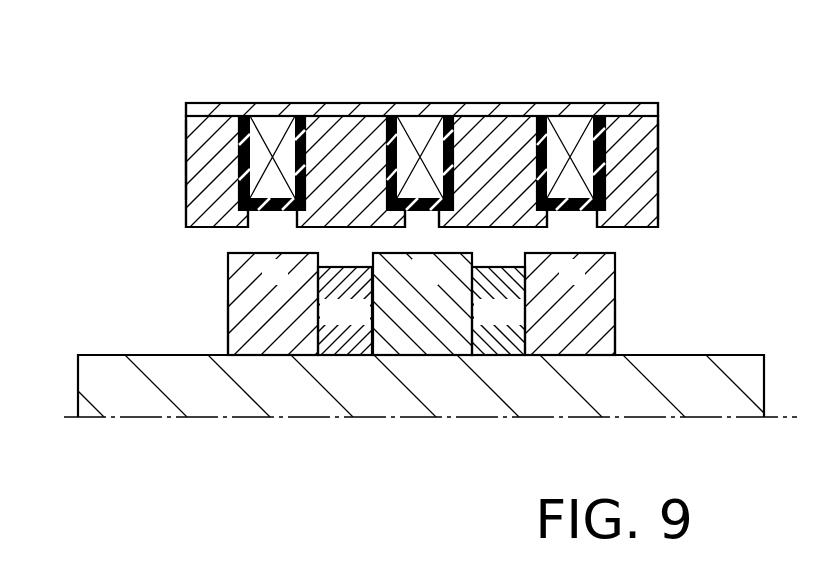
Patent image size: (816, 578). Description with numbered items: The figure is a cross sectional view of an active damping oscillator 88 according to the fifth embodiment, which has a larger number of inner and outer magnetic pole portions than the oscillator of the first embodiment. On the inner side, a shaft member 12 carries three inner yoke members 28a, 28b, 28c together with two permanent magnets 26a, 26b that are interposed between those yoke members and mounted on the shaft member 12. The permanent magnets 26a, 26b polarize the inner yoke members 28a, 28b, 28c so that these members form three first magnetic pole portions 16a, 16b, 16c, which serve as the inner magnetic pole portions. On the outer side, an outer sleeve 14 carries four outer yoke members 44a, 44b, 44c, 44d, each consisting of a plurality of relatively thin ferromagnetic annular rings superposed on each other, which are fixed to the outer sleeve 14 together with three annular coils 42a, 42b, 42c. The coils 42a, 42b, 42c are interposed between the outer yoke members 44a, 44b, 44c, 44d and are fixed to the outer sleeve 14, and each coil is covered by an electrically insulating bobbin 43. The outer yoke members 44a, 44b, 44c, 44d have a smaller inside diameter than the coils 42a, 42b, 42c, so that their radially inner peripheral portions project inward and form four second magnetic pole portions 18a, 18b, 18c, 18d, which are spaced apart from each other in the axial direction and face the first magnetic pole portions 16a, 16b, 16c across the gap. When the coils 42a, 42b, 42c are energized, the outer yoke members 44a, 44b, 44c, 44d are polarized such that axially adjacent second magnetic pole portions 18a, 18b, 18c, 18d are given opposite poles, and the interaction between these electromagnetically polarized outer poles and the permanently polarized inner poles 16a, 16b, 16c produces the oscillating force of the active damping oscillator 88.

The shaft member 12 is at (137, 365).
The outer sleeve 14 is at (210, 110).
The first magnetic pole portion 16a is at (250, 258).
The first magnetic pole portion 16b is at (392, 262).
The first magnetic pole portion 16c is at (590, 258).
The second magnetic pole portion 18a is at (349, 220).
The second magnetic pole portion 18b is at (203, 223).
The second magnetic pole portion 18c is at (490, 217).
The second magnetic pole portion 18d is at (641, 222).
The permanent magnet 26a is at (337, 353).
The permanent magnet 26b is at (505, 352).
The inner yoke member 28a is at (208, 327).
The inner yoke member 28b is at (433, 374).
The inner yoke member 28c is at (637, 335).
The coil 42a is at (261, 120).
The coil 42b is at (423, 127).
The coil 42c is at (578, 123).
The electrically insulating bobbin 43 is at (373, 122).
The outer yoke member 44a is at (325, 102).
The outer yoke member 44b is at (163, 148).
The outer yoke member 44c is at (497, 100).
The outer yoke member 44d is at (678, 172).
The active damping oscillator 88 is at (110, 194).